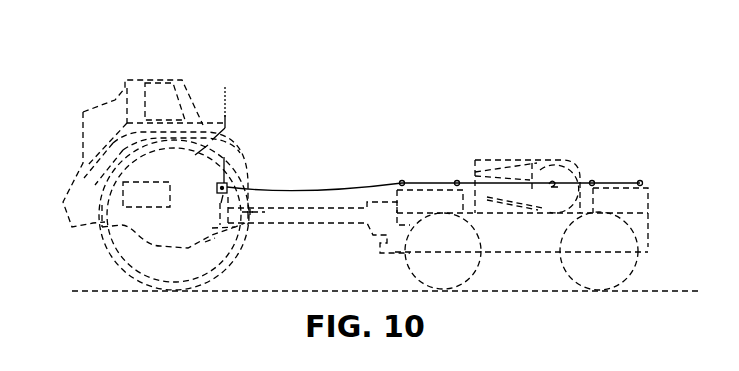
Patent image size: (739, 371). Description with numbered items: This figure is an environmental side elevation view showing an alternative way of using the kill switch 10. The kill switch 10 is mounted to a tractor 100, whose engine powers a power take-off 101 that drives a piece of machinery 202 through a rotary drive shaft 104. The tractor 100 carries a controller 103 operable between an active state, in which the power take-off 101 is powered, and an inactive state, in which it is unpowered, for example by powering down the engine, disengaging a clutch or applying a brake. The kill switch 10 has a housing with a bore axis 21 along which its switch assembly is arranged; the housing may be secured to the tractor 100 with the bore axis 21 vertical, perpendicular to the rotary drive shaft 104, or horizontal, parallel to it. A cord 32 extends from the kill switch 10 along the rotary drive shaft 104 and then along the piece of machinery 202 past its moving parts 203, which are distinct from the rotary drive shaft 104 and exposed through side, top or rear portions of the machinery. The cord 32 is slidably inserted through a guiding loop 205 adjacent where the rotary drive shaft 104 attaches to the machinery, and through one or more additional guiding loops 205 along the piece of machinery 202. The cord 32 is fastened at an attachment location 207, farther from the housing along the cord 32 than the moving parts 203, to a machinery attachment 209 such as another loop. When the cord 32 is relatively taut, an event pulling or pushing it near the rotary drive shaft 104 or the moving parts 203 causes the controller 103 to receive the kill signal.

The kill switch 10 is at (417, 159).
The bore axis 21 is at (112, 217).
The cord 32 is at (338, 188).
The tractor 100 is at (225, 160).
The power take-off 101 is at (220, 218).
The controller 103 is at (108, 223).
The rotary drive shaft 104 is at (332, 222).
The piece of machinery 202 is at (521, 126).
The moving parts 203 is at (490, 160).
The guiding loop 205 is at (402, 181).
The attachment location 207 is at (653, 145).
The machinery attachment 209 is at (640, 181).